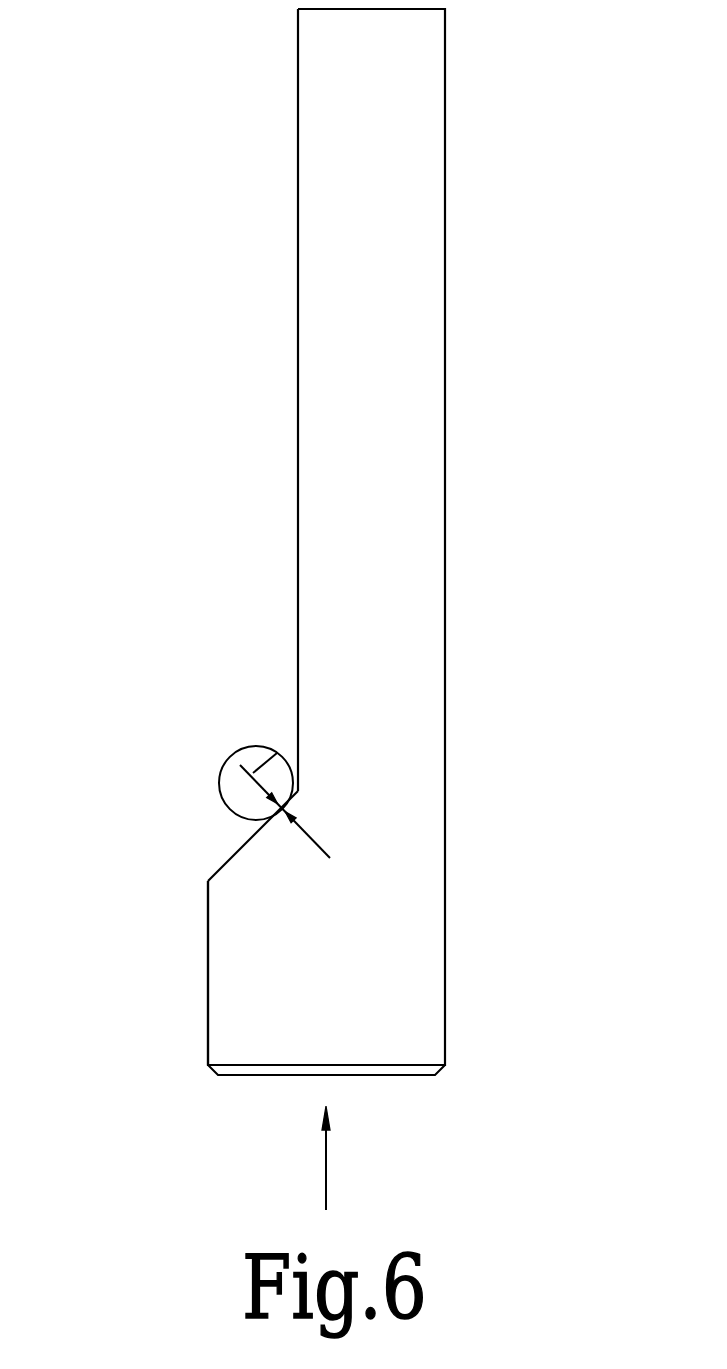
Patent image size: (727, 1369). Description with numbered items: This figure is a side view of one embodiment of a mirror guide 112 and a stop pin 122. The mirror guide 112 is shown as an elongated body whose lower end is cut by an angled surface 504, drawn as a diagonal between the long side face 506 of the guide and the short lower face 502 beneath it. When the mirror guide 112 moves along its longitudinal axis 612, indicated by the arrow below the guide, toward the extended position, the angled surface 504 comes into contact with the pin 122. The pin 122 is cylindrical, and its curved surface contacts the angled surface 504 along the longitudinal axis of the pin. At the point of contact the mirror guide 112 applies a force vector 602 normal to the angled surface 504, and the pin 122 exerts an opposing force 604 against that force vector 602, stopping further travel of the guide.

The mirror guide 112 is at (445, 113).
The leading face 506 is at (298, 557).
The angled surface 504 is at (227, 862).
The lower face 502 is at (208, 966).
The stop pin 122 is at (230, 762).
The force vector 602 is at (320, 842).
The opposing force 604 is at (277, 753).
The longitudinal axis 612 is at (326, 1157).